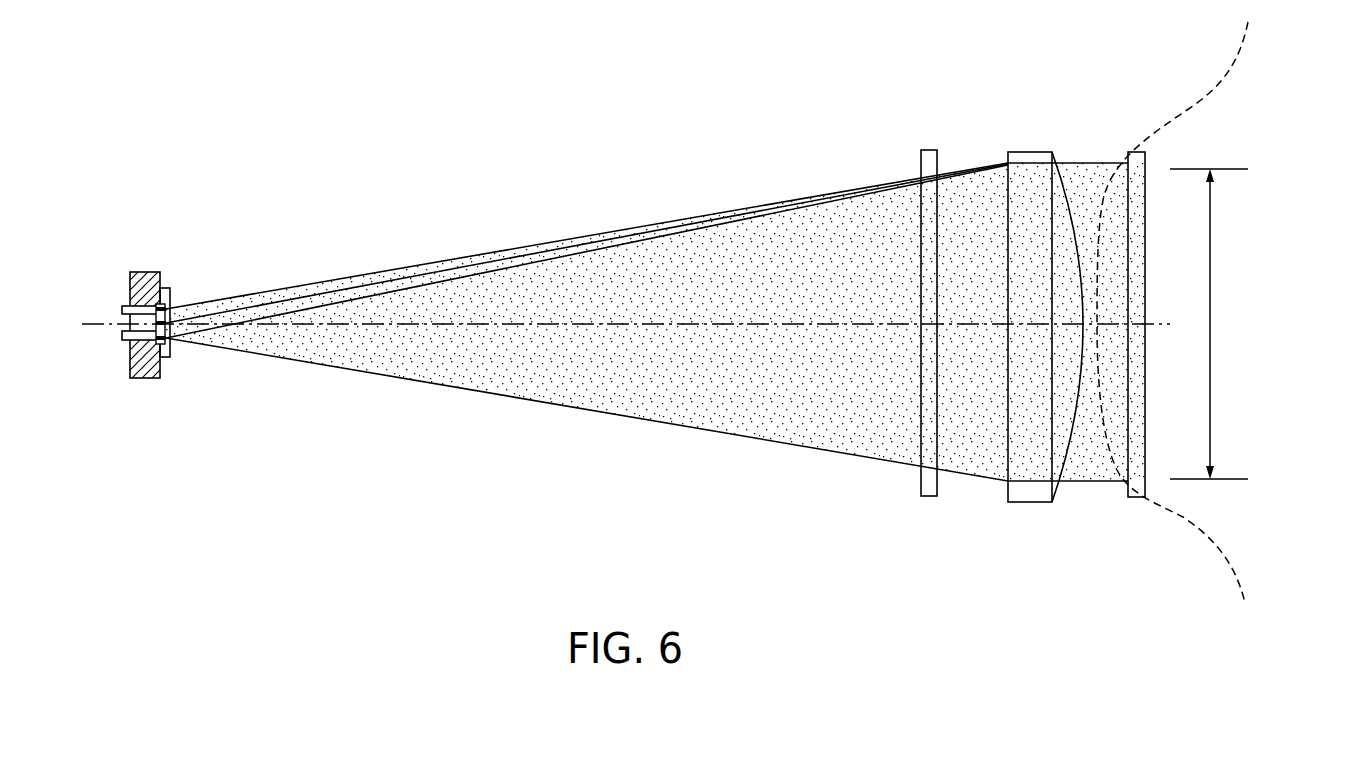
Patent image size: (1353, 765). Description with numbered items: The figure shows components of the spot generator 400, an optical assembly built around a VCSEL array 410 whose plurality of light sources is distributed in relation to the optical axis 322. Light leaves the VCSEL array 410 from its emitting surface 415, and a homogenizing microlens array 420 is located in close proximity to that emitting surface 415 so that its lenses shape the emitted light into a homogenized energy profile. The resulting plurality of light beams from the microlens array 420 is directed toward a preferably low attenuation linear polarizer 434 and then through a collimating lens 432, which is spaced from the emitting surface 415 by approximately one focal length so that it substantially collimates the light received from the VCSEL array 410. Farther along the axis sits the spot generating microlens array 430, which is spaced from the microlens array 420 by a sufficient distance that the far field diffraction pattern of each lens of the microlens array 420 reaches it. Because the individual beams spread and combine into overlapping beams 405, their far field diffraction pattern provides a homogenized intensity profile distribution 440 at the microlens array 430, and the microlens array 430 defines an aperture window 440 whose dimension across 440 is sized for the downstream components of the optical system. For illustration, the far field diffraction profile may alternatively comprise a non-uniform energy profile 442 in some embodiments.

The spot generator 400 is at (300, 118).
The VCSEL array 410 is at (138, 248).
The emitting surface 415 is at (161, 303).
The microlens array 420 is at (167, 358).
The overlapping beams 405 is at (655, 438).
The optical axis 322 is at (598, 324).
The linear polarizer 434 is at (927, 150).
The collimating lens 432 is at (1028, 150).
The spot generating microlens array 430 is at (1133, 150).
The homogenized intensity profile distribution 440 is at (1270, 183).
The non-uniform energy profile 442 is at (1211, 323).